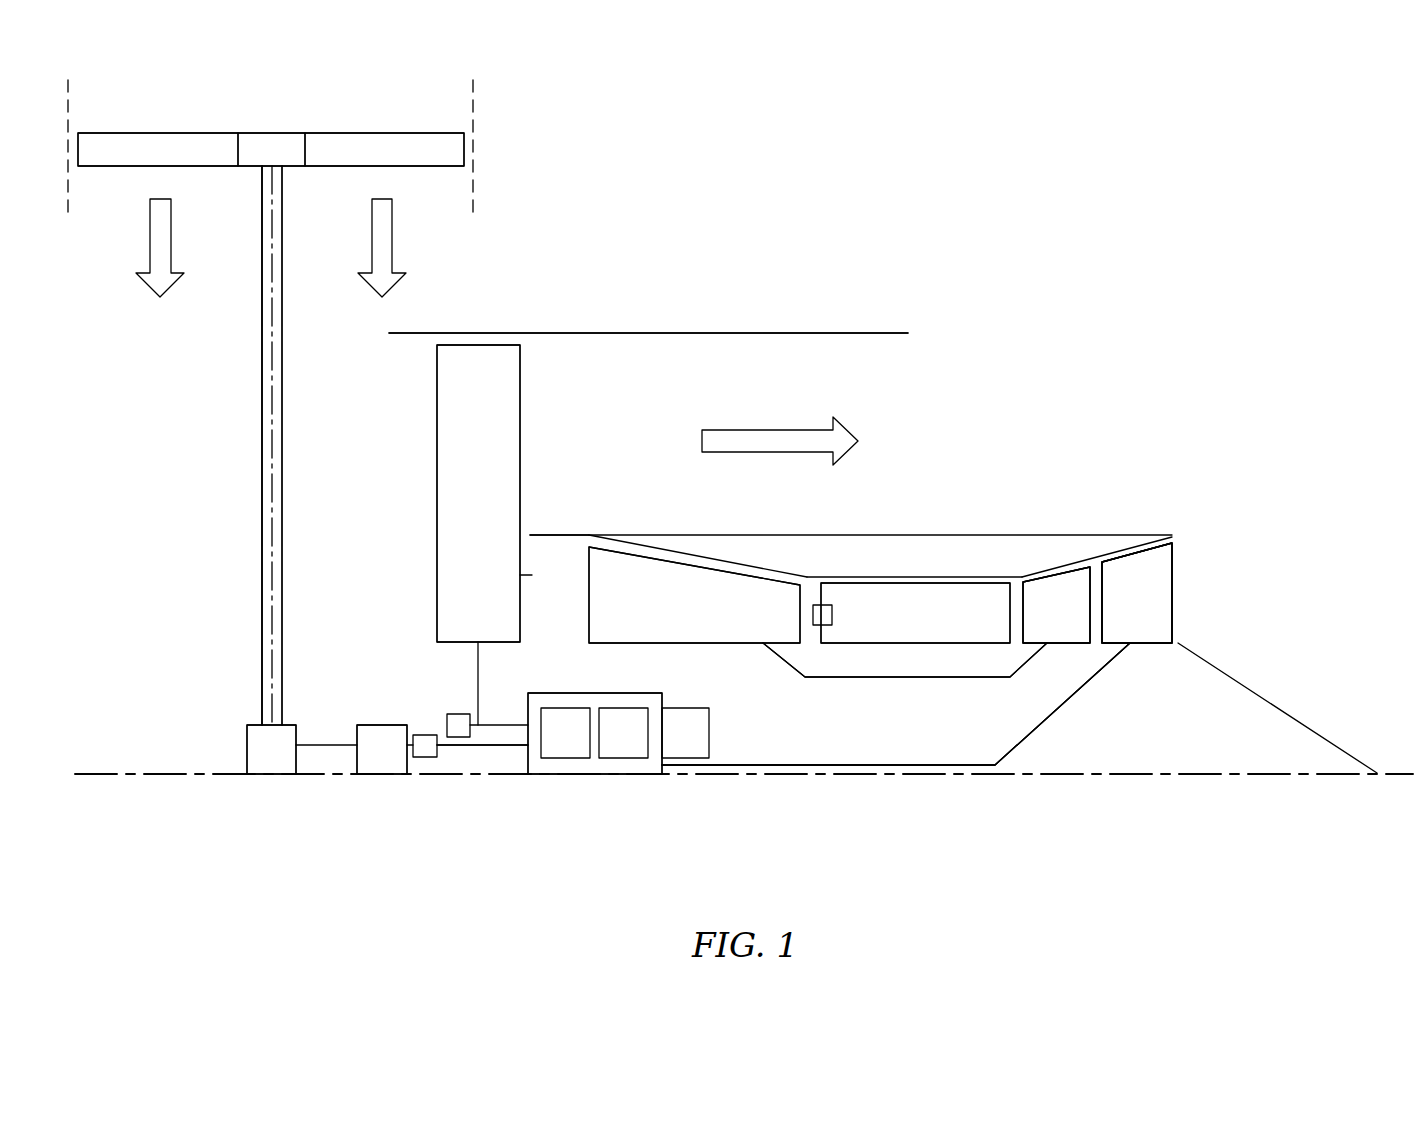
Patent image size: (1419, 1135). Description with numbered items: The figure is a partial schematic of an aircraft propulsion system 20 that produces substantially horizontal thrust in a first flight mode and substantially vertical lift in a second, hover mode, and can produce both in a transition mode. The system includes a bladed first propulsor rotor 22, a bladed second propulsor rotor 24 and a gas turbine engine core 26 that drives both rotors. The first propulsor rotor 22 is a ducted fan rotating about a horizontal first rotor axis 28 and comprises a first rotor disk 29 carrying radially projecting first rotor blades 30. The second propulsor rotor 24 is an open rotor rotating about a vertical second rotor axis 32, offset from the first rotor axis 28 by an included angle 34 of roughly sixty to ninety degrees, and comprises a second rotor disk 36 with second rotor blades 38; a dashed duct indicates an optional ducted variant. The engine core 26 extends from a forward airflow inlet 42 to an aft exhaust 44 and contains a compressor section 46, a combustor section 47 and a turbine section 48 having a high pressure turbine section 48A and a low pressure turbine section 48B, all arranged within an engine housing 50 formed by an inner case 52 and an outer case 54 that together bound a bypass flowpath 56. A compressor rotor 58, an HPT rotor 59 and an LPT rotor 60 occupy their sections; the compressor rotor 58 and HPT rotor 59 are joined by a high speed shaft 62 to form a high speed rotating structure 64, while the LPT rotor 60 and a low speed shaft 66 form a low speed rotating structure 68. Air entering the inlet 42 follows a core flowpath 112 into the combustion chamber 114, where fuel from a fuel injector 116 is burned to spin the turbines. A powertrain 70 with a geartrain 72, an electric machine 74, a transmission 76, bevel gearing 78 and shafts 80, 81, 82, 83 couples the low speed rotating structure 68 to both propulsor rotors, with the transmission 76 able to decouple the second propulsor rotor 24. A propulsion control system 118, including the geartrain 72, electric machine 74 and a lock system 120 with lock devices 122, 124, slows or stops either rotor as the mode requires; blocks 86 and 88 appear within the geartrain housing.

The propulsion system 20 is at (1157, 195).
The first propulsor rotor 22 is at (422, 615).
The second propulsor rotor 24 is at (422, 128).
The gas turbine engine core 26 is at (1203, 488).
The first rotor axis 28 is at (1402, 776).
The first rotor disk 29 is at (478, 682).
The first rotor blades 30 is at (437, 475).
The second rotor axis 32 is at (262, 408).
The included angle 34 is at (262, 635).
The second rotor disk 36 is at (272, 133).
The second rotor blades 38 is at (160, 133).
The airflow inlet 42 is at (530, 575).
The exhaust 44 is at (1192, 607).
The compressor section 46 is at (715, 567).
The combustor section 47 is at (940, 577).
The turbine section 48 is at (1005, 452).
The high pressure turbine section 48A is at (1055, 570).
The low pressure turbine section 48B is at (1128, 547).
The engine housing 50 is at (878, 298).
The inner case 52 is at (882, 535).
The outer case 54 is at (690, 333).
The bypass flowpath 56 is at (614, 412).
The compressor rotor 58 is at (747, 643).
The HPT rotor 59 is at (1060, 643).
The LPT rotor 60 is at (1153, 643).
The high speed shaft 62 is at (907, 677).
The high speed rotating structure 64 is at (802, 682).
The low speed shaft 66 is at (870, 765).
The low speed rotating structure 68 is at (975, 772).
The powertrain 70 is at (433, 825).
The geartrain 72 is at (585, 776).
The electric machine 74 is at (672, 746).
The transmission 76 is at (369, 763).
The gearing 78 is at (258, 763).
The shaft 80 is at (507, 725).
The shaft 81 is at (482, 747).
The shaft 82 is at (325, 745).
The shaft 83 is at (262, 527).
The processor 86 is at (552, 746).
The memory 88 is at (610, 746).
The core flowpath 112 is at (538, 614).
The combustion chamber 114 is at (948, 629).
The fuel injector 116 is at (832, 615).
The propulsion control system 118 is at (547, 823).
The lock system 120 is at (451, 770).
The lock device 122 is at (447, 714).
The lock device 124 is at (427, 757).